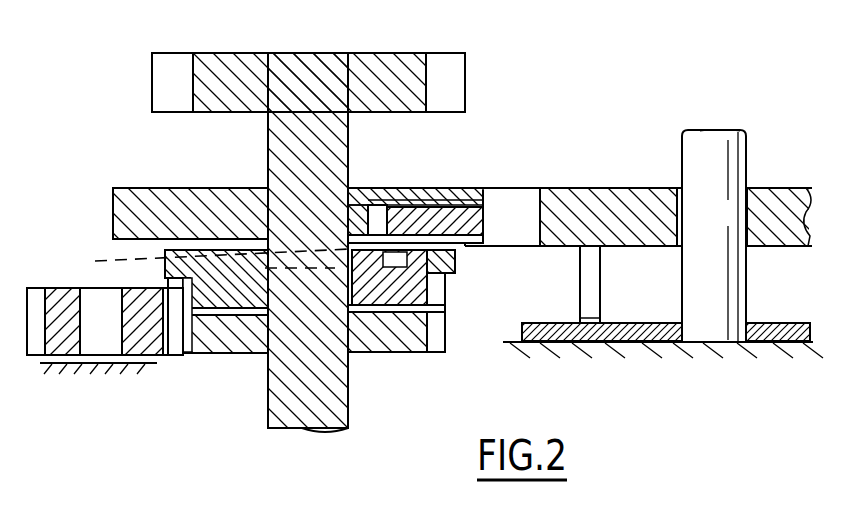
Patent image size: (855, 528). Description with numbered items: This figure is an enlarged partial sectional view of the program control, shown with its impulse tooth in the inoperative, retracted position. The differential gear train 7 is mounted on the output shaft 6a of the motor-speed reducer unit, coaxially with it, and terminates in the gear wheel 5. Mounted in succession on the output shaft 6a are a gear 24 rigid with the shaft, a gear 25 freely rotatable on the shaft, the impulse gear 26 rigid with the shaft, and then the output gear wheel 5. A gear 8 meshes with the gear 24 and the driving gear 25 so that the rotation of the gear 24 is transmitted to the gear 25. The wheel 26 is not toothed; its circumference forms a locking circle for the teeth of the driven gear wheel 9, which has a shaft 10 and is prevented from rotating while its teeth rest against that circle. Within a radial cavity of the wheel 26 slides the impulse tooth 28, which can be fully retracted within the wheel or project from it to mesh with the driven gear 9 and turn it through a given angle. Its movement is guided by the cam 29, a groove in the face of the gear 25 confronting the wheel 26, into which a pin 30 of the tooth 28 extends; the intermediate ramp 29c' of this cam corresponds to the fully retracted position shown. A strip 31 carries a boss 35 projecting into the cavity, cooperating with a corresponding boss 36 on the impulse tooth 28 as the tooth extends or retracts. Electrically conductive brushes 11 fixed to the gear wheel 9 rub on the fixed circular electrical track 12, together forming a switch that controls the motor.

The gear wheel 5 is at (230, 66).
The output shaft 6a is at (337, 407).
The differential gear train 7 is at (120, 132).
The gear 8 is at (58, 365).
The driven gear wheel 9 is at (618, 188).
The shaft 10 is at (735, 163).
The brushes 11 is at (596, 283).
The electrical track 12 is at (646, 320).
The gear 24 is at (243, 343).
The gear 25 is at (223, 317).
The impulse gear 26 is at (180, 188).
The impulse tooth 28 is at (487, 222).
The cam 29 is at (206, 260).
The intermediate ramp 29c' is at (403, 322).
The pin 30 is at (455, 262).
The strip 31 is at (460, 188).
The boss 35 is at (455, 200).
The boss 36 is at (403, 188).